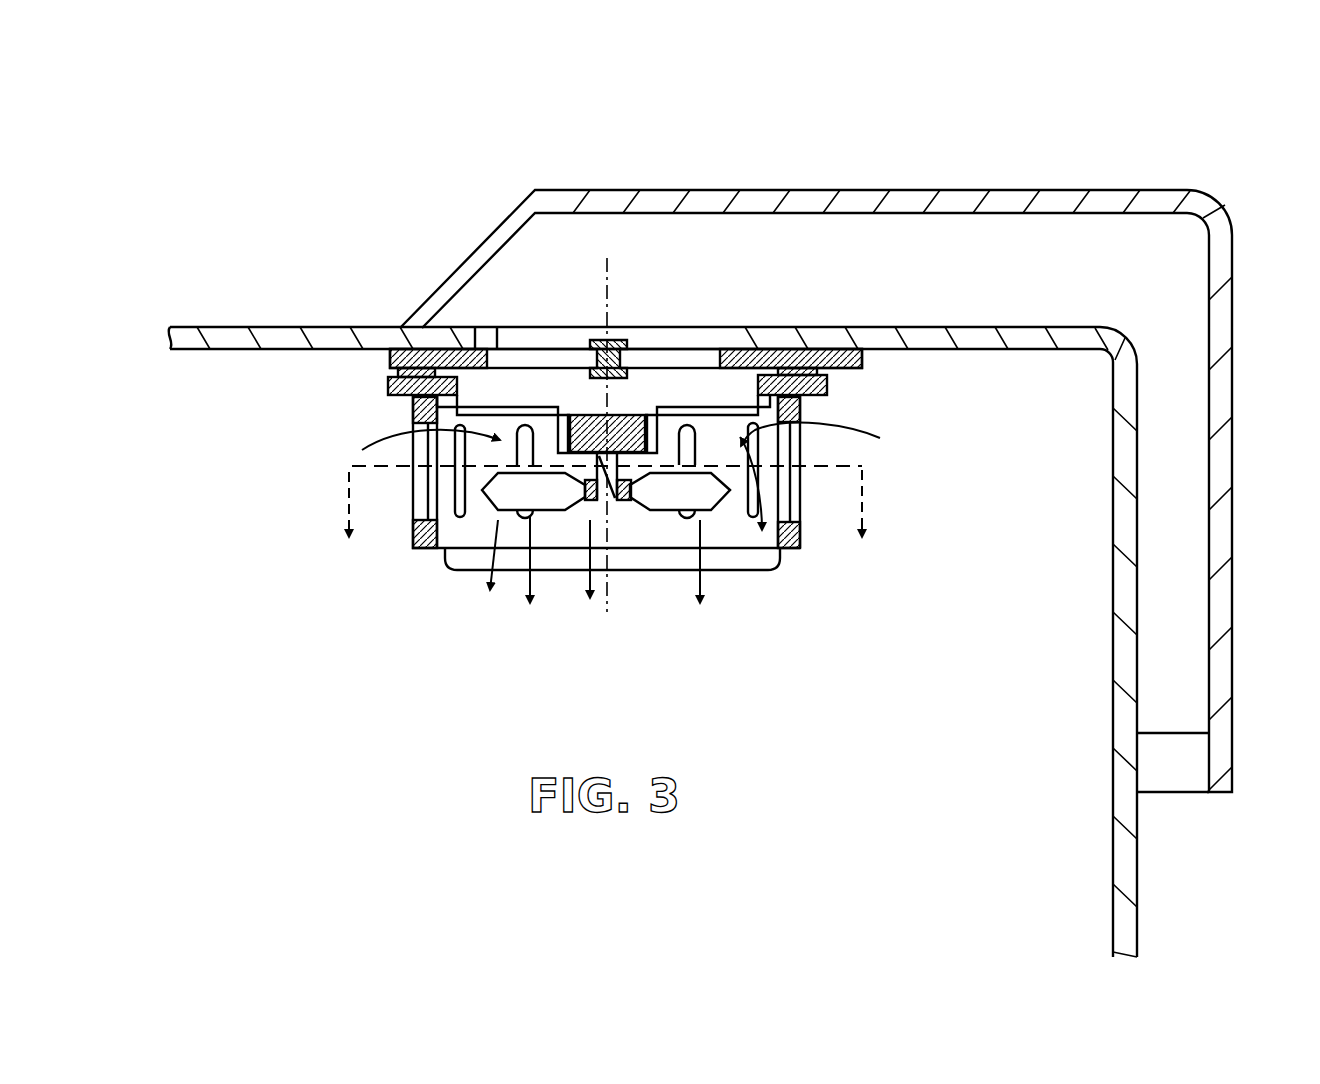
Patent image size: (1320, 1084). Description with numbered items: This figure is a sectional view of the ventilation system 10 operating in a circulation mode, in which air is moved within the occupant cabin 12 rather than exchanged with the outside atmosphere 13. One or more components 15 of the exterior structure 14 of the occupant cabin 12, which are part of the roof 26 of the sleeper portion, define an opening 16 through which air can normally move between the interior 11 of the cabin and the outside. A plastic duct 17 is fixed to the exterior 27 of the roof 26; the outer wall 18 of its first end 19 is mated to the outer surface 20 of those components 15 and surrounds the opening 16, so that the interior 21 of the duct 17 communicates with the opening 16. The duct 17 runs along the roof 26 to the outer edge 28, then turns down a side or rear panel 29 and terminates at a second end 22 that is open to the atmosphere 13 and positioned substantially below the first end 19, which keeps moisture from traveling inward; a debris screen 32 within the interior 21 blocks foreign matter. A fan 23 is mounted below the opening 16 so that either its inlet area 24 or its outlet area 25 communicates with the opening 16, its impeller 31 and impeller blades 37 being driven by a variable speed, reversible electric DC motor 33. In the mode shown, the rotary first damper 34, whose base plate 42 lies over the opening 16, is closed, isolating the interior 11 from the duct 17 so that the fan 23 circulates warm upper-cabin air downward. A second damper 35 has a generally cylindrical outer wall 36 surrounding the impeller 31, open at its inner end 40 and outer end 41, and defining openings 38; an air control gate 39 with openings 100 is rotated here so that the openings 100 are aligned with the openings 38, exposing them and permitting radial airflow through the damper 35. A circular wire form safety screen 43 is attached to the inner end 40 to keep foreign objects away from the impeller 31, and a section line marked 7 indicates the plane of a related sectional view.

The ventilation system 10 is at (508, 166).
The interior of the occupant cabin 11 is at (768, 755).
The occupant cabin 12 is at (250, 350).
The outside atmosphere 13 is at (1188, 800).
The exterior structure of the occupant cabin 14 is at (245, 327).
The components of the exterior structure 15 is at (445, 327).
The opening 16 is at (493, 337).
The duct 17 is at (815, 190).
The outer wall of the first end of the duct 18 is at (413, 312).
The first end of the duct 19 is at (400, 350).
The outer surface 20 is at (297, 327).
The interior of the duct 21 is at (713, 228).
The second end of the duct 22 is at (1228, 758).
The fan 23 is at (630, 437).
The inlet area of the fan 24 is at (556, 537).
The outlet area of the fan 25 is at (488, 457).
The roof 26 is at (185, 327).
The exterior of the roof 27 is at (215, 327).
The outer edge of the roof 28 is at (1107, 352).
The side or rear panel 29 is at (1112, 660).
The impeller 31 is at (513, 550).
The debris screen 32 is at (1175, 733).
The electric DC motor 33 is at (748, 535).
The first damper 34 is at (398, 393).
The second damper 35 is at (800, 422).
The outer wall of the second damper 36 is at (782, 550).
The impeller blades 37 is at (508, 555).
The openings in the outer wall of the second damper 38 is at (443, 549).
The air control gate 39 is at (413, 535).
The inner end of the second damper 40 is at (712, 537).
The outer end of the second damper 41 is at (430, 440).
The base plate of the first damper 42 is at (390, 355).
The wire form safety screen 43 is at (672, 537).
The openings in the air control gate 100 is at (413, 508).
The section line 7- 7 is at (607, 493).